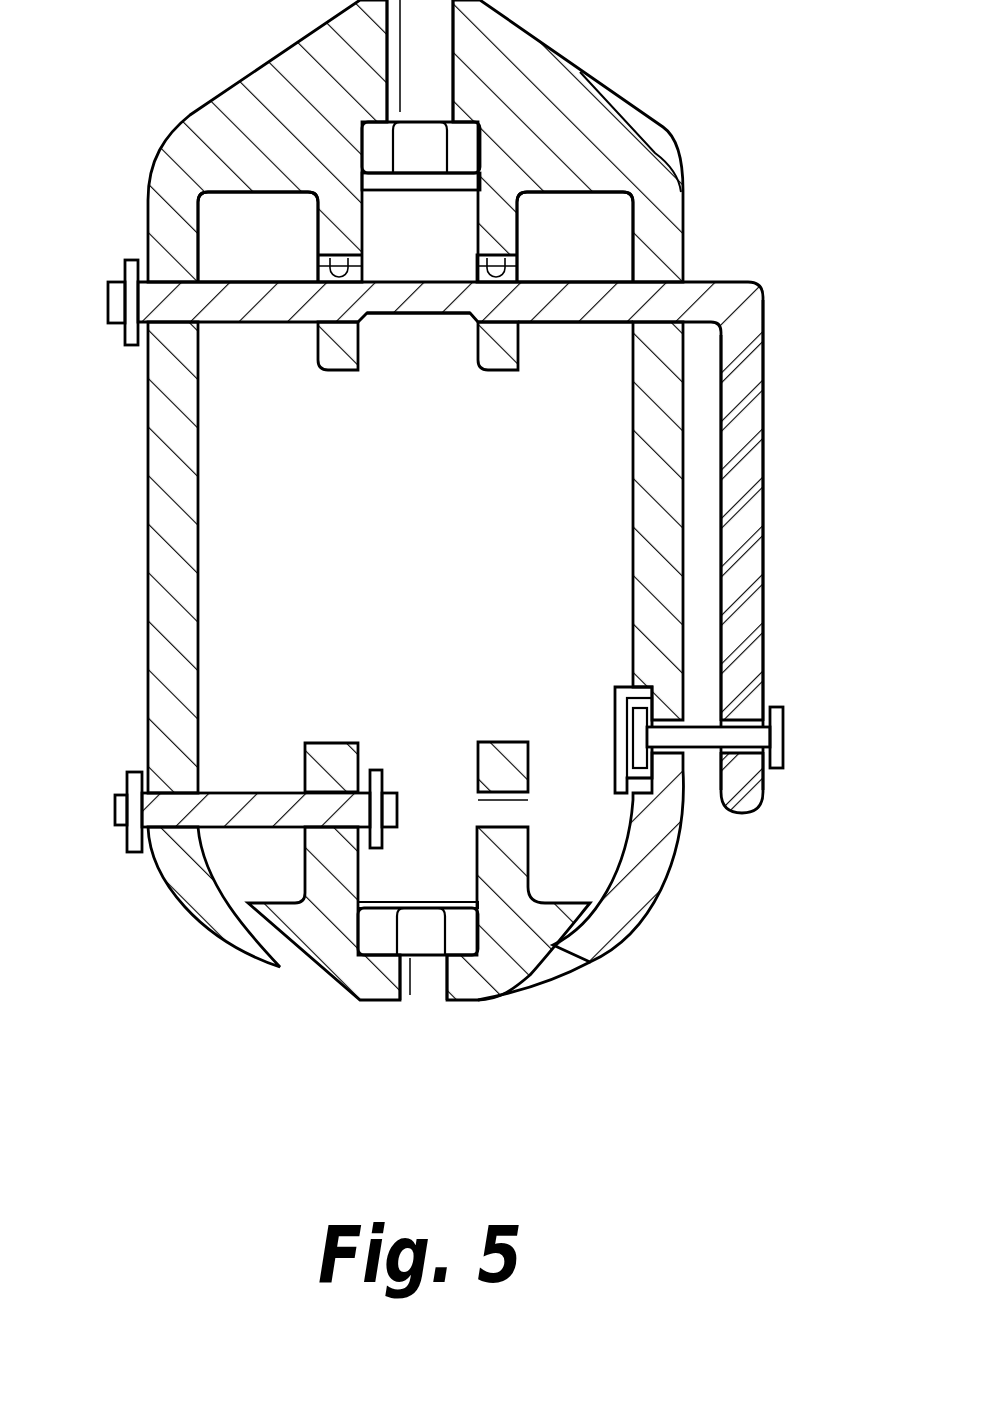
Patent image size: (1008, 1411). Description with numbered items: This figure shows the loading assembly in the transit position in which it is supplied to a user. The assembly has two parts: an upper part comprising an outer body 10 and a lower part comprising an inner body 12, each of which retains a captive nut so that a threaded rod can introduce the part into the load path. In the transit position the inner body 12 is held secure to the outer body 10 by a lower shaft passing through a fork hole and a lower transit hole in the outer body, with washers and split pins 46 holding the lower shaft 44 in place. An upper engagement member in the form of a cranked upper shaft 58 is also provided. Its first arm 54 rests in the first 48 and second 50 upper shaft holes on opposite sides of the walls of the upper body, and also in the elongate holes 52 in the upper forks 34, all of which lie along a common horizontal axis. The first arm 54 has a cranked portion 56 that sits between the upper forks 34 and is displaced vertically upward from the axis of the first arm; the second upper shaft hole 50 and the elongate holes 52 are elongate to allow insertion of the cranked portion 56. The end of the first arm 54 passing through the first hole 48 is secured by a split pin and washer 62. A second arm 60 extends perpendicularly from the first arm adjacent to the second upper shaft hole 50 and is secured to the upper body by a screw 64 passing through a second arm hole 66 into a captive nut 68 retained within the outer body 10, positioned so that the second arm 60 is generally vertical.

The outer body 10 is at (627, 91).
The inner body 12 is at (515, 968).
The upper forks 34 is at (328, 372).
The bolt 44 is at (257, 793).
The washers and split pins 46 is at (133, 853).
The first upper shaft hole 48 is at (150, 330).
The second upper shaft hole 50 is at (693, 265).
The elongate holes 52 is at (322, 268).
The first arm 54 is at (587, 327).
The cranked portion 56 is at (415, 325).
The cranked upper shaft 58 is at (764, 551).
The second arm 60 is at (764, 413).
The split pin and washer 62 is at (130, 262).
The screw 64 is at (786, 755).
The second arm hole 66 is at (740, 730).
The captive nut 68 is at (683, 820).